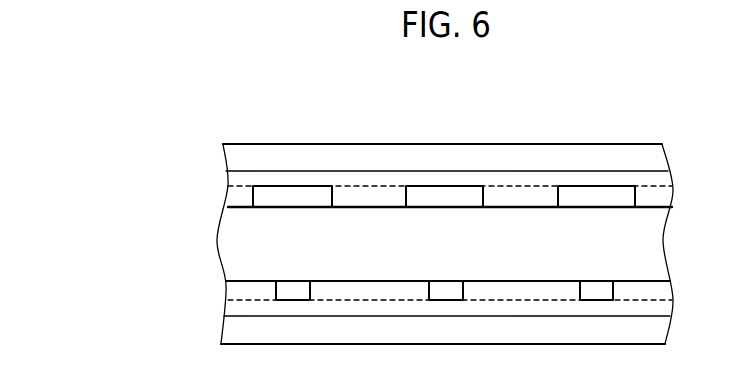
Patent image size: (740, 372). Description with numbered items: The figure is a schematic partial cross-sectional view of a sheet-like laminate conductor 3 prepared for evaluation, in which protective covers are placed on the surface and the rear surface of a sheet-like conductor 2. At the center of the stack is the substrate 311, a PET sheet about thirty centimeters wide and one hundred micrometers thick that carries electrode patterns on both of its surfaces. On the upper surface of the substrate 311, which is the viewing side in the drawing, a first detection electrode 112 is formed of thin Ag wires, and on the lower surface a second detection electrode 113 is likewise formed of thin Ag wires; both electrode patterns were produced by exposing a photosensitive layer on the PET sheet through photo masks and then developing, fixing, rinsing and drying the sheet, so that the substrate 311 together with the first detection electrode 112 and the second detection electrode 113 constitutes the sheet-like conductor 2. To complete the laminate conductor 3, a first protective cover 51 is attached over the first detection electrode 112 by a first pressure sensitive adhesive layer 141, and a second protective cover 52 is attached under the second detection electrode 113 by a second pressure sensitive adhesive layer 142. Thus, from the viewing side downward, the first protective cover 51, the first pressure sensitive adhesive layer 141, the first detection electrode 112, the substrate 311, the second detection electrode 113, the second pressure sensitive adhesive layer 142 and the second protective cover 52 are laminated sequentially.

The sheet-like laminate conductor 3 is at (676, 128).
The sheet-like conductor 2 is at (134, 172).
The first protective cover 51 is at (660, 151).
The first pressure sensitive adhesive layer 141 is at (660, 181).
The first detection electrode 112 is at (226, 194).
The substrate 311 is at (240, 243).
The second detection electrode 113 is at (228, 290).
The second pressure sensitive adhesive layer 142 is at (660, 310).
The second protective cover 52 is at (660, 332).